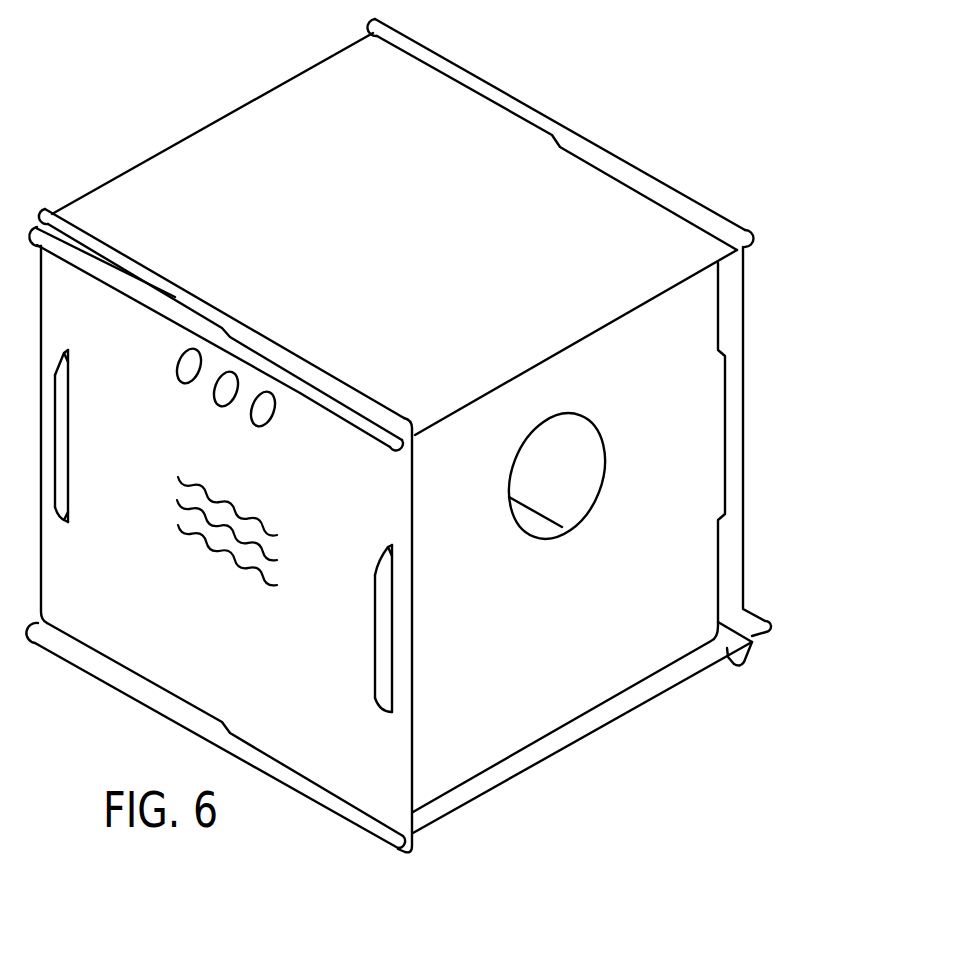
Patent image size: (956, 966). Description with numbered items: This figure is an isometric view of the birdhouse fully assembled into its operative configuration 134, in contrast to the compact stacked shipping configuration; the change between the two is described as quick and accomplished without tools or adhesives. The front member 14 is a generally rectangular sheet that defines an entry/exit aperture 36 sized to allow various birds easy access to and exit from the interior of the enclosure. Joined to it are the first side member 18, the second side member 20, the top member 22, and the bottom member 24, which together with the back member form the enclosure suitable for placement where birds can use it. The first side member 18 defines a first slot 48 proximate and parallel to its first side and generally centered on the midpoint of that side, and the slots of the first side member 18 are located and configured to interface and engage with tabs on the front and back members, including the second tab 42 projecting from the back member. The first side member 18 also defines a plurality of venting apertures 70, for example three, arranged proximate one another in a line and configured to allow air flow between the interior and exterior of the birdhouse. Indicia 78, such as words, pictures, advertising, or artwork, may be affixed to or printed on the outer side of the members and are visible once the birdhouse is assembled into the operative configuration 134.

The operative configuration 134 is at (648, 86).
The top member 22 is at (413, 236).
The second side member 20 is at (743, 293).
The front member 14 is at (578, 662).
The entry/exit aperture 36 is at (578, 485).
The first side member 18 is at (200, 606).
The bottom member 24 is at (93, 660).
The second tab 42 is at (62, 447).
The first slot 48 is at (64, 525).
The venting apertures 70 is at (190, 374).
The indicia 78 is at (270, 598).